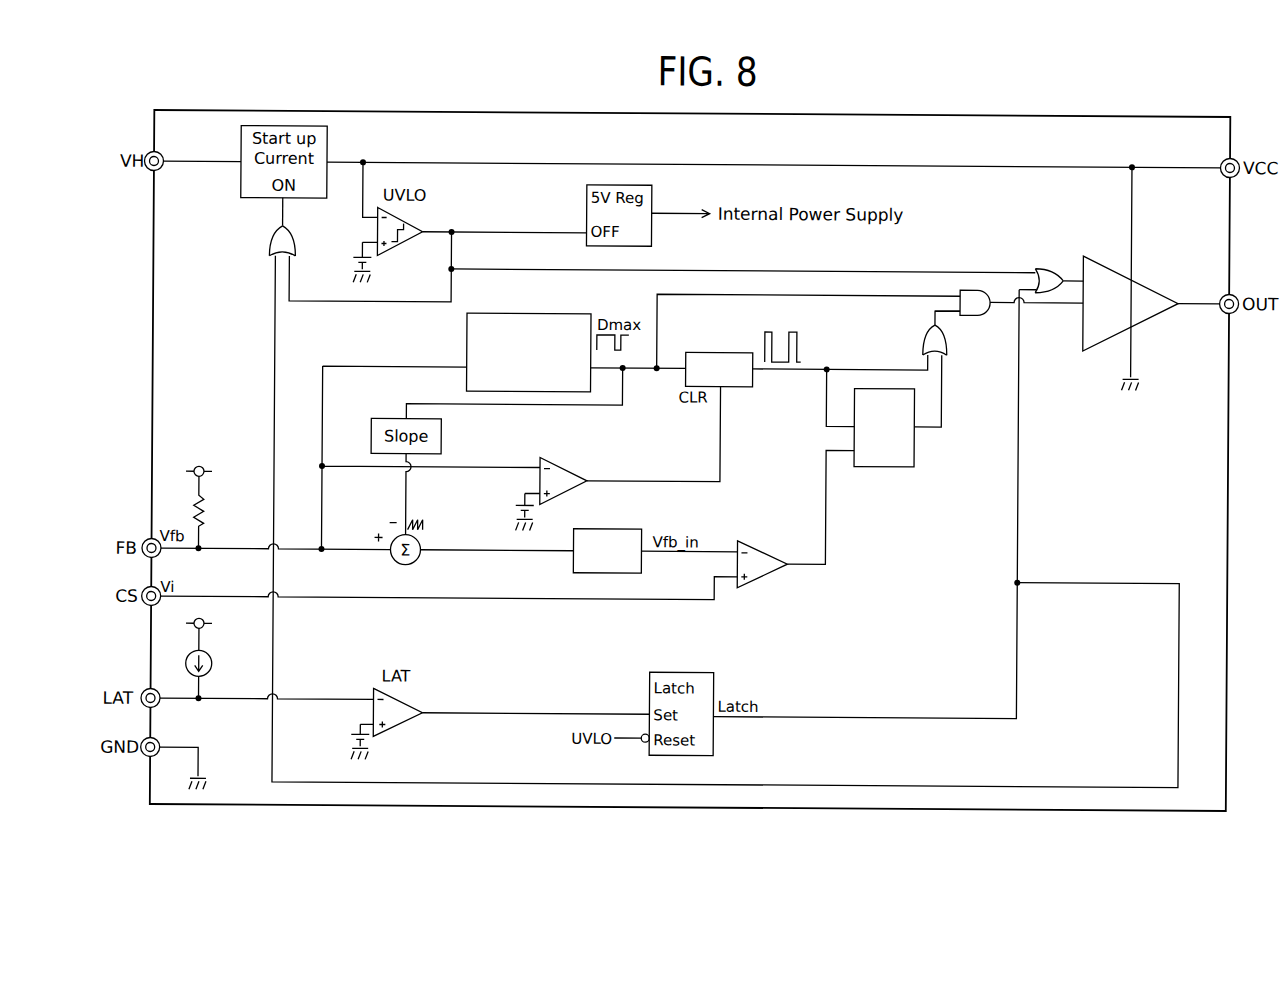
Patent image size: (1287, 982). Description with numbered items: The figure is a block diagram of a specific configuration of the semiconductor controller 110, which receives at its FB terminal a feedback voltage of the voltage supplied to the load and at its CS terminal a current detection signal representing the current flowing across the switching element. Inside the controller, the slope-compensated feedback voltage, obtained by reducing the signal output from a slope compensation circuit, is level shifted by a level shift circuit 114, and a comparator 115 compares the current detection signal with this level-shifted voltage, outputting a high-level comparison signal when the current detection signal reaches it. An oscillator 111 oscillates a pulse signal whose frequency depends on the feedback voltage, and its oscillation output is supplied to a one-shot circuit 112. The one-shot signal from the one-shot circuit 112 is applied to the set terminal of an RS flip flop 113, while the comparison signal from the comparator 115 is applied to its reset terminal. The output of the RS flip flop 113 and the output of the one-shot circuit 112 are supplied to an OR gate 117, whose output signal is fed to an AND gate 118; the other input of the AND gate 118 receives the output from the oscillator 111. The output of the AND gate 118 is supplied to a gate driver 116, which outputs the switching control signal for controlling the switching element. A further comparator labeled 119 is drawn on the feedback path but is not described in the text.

The semiconductor controller 110 is at (1000, 110).
The oscillator 111 is at (529, 311).
The one-shot circuit 112 is at (708, 349).
The RS flip flop 113 is at (916, 447).
The level shift circuit 114 is at (608, 526).
The comparator 115 is at (766, 574).
The gate driver 116 is at (1147, 277).
The OR gate 117 is at (922, 326).
The AND gate 118 is at (981, 310).
The feedback OFF comparator 119 is at (575, 464).